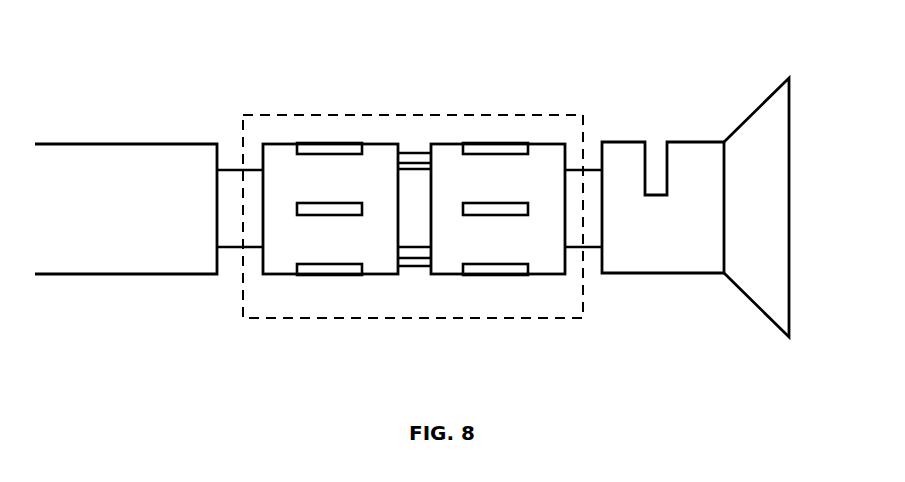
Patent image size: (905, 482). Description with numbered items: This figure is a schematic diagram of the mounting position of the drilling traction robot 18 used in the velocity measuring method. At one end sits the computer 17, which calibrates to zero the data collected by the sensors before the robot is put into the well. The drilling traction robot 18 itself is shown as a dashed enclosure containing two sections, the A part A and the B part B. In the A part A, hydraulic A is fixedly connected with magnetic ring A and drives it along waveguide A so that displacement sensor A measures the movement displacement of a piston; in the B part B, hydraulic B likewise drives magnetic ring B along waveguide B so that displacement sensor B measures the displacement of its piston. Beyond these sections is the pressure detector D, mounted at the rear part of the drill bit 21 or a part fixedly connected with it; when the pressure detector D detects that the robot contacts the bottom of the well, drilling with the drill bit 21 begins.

The computer 17 is at (163, 160).
The drilling traction robot 18 is at (412, 318).
The A part of the drilling traction robot A is at (330, 147).
The B part of the drilling traction robot B is at (497, 147).
The pressure detector D is at (653, 160).
The drill bit 21 is at (760, 313).